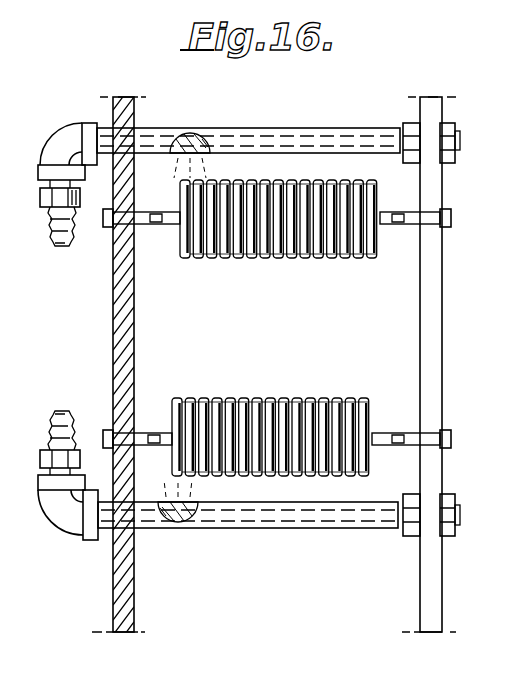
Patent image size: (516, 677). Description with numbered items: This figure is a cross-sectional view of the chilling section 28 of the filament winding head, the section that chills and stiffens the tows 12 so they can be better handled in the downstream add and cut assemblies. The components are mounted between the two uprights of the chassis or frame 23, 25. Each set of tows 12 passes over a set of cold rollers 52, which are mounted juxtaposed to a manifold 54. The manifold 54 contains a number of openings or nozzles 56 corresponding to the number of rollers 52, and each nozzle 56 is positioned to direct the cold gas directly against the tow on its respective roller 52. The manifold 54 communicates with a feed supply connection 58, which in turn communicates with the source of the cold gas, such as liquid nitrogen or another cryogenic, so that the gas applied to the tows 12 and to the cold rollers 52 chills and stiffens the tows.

The tows 12 is at (183, 259).
The chassis or frame 23 is at (122, 343).
The chassis or frame 25 is at (432, 338).
The chilling section 28 is at (388, 92).
The cold roller 52 is at (364, 242).
The manifold 54 is at (333, 140).
The nozzle 56 is at (200, 148).
The feed supply connection 58 is at (56, 242).